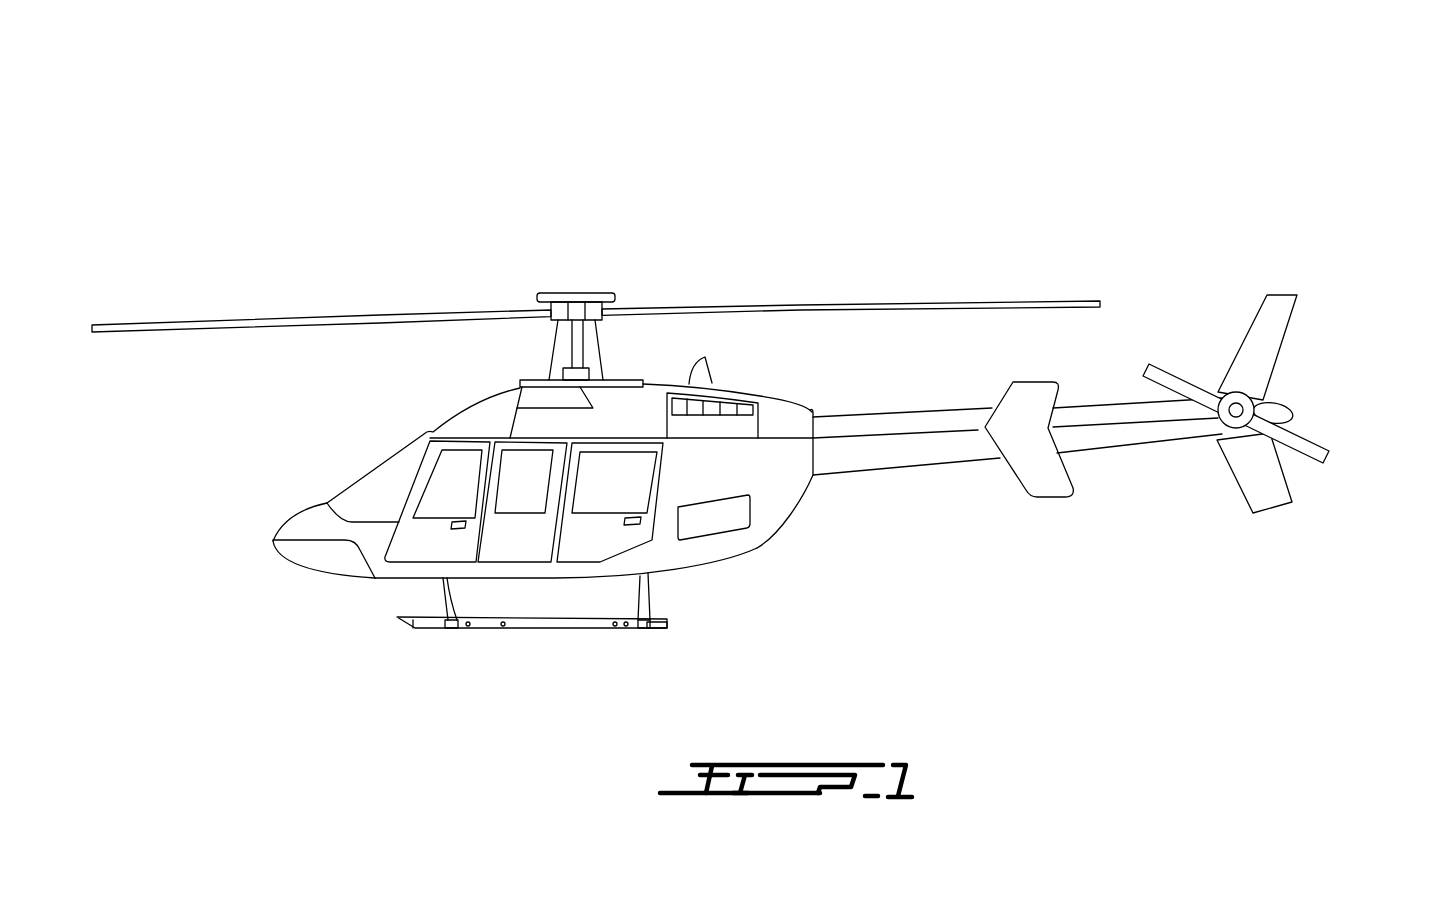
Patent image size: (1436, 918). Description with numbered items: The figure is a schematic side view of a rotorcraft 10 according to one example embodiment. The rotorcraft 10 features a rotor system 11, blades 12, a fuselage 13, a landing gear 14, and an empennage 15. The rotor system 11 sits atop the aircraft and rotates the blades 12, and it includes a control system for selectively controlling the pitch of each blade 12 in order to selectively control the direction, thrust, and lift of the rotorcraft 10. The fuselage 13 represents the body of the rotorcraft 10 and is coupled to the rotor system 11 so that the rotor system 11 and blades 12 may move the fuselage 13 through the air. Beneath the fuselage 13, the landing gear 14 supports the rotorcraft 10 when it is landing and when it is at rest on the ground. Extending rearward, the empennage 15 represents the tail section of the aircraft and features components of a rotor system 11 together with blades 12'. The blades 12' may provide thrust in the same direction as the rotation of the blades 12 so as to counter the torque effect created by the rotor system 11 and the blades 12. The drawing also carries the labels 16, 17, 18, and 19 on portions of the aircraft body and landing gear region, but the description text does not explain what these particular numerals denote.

The rotorcraft 10 is at (308, 171).
The rotor system 11 is at (578, 293).
The blades 12 is at (596, 272).
The blades 12' is at (1279, 404).
The fuselage 13 is at (322, 577).
The landing gear 14 is at (488, 633).
The empennage 15 is at (920, 468).
The fuselage 16 is at (662, 545).
The engine compartment 17 is at (637, 385).
The landing gear strut 18 is at (532, 580).
The rear fuselage section 19 is at (788, 510).